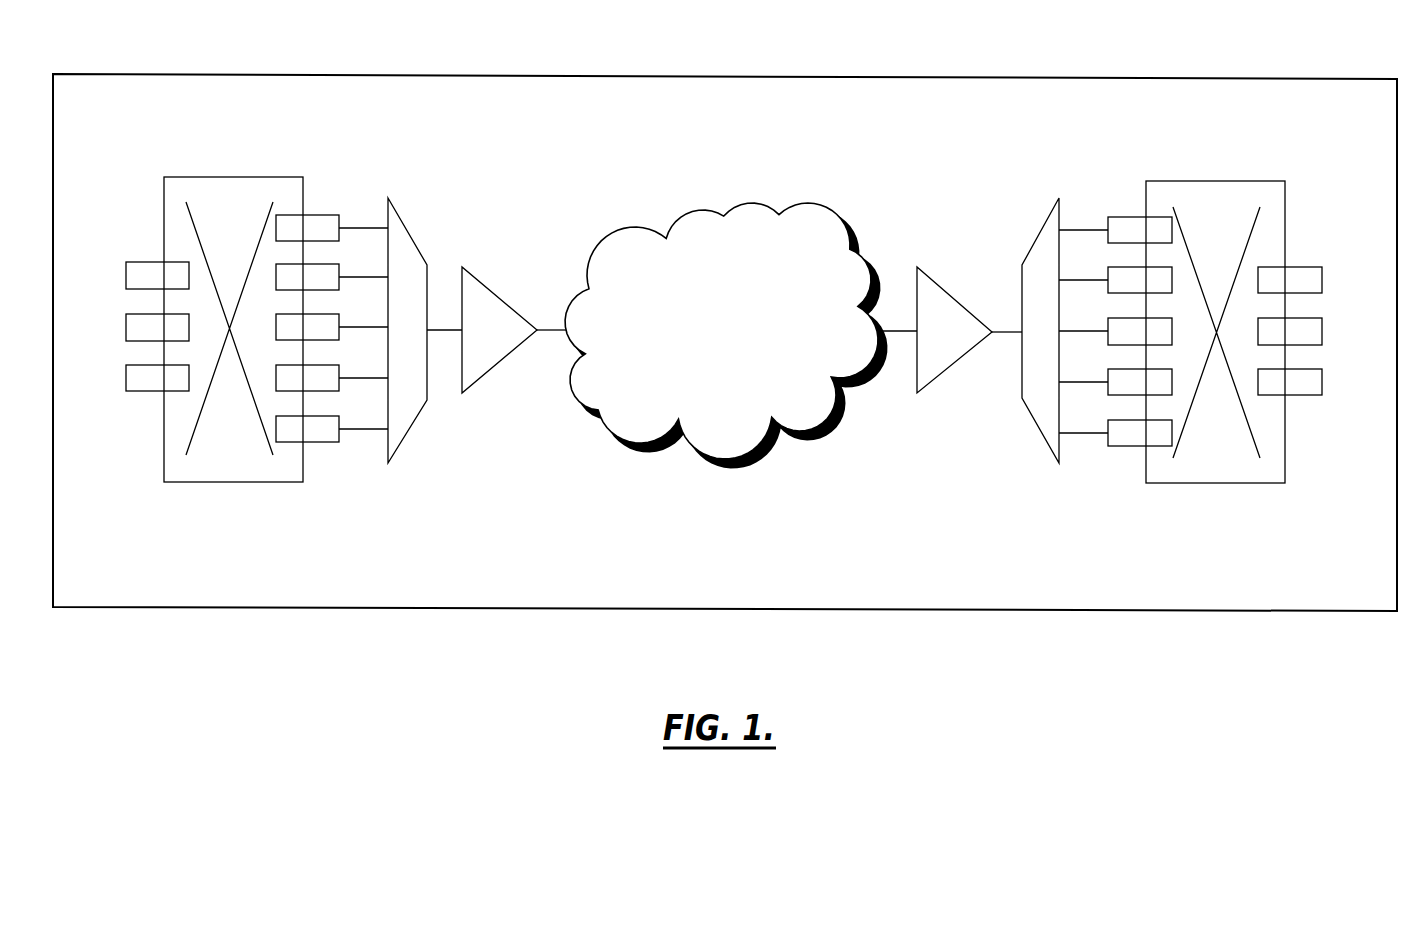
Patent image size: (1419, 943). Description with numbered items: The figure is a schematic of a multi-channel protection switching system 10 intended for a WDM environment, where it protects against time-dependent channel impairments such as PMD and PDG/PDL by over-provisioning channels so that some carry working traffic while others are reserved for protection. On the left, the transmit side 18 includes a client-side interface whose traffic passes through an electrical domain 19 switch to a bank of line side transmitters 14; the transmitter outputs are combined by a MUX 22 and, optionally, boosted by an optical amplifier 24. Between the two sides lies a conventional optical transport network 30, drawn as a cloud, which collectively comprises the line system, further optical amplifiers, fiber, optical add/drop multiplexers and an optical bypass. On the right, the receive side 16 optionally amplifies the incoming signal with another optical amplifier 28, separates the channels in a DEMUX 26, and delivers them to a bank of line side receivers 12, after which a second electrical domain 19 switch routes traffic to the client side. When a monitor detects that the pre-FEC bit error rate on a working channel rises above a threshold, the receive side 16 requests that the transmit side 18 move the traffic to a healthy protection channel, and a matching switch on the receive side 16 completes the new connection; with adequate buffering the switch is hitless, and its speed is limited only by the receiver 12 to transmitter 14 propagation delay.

The multi-channel protection switching system 10 is at (1025, 79).
The receiver 12 is at (1161, 95).
The transmitter 14 is at (324, 92).
The receive side 16 is at (1304, 95).
The transmit side 18 is at (142, 92).
The electrical domain 19 is at (243, 458).
The MUX 22 is at (406, 226).
The optical amplifier 24 is at (474, 272).
The DEMUX 26 is at (1043, 227).
The optical amplifier 28 is at (935, 275).
The optical transport network 30 is at (745, 202).